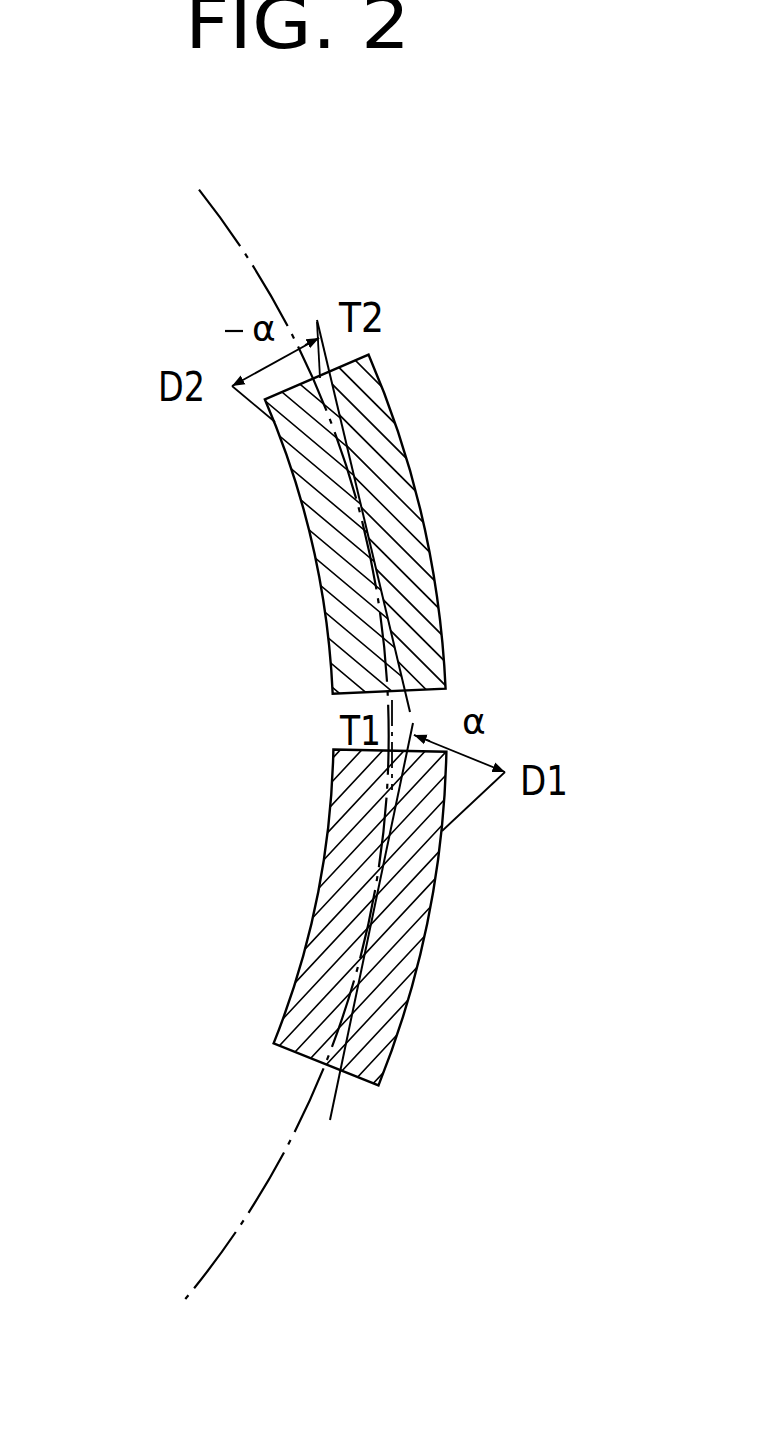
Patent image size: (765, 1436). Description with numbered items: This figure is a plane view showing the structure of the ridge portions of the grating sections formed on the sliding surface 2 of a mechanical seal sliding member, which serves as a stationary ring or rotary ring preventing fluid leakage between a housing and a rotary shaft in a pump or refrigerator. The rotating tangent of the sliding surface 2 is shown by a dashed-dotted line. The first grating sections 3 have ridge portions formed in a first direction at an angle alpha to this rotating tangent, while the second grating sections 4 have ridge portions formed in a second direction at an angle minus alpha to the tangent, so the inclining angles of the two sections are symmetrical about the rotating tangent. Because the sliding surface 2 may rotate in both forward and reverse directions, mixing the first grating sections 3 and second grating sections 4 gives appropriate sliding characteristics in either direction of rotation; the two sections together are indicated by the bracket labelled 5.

The sliding surface 2 is at (301, 948).
The first grating sections 3 is at (355, 826).
The second grating sections 4 is at (348, 620).
The permanent magnet pair 5 is at (382, 675).